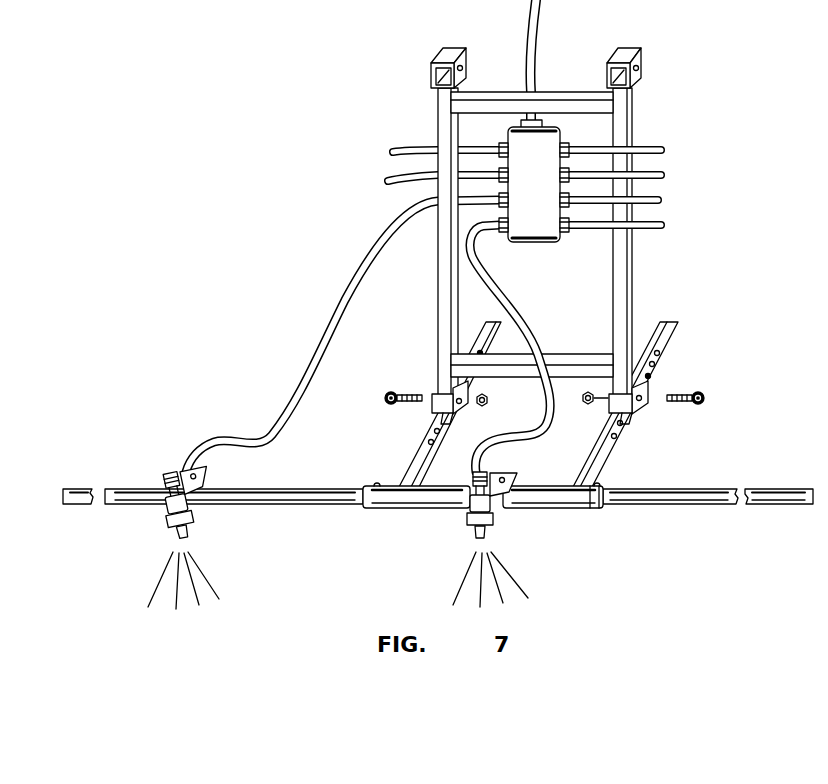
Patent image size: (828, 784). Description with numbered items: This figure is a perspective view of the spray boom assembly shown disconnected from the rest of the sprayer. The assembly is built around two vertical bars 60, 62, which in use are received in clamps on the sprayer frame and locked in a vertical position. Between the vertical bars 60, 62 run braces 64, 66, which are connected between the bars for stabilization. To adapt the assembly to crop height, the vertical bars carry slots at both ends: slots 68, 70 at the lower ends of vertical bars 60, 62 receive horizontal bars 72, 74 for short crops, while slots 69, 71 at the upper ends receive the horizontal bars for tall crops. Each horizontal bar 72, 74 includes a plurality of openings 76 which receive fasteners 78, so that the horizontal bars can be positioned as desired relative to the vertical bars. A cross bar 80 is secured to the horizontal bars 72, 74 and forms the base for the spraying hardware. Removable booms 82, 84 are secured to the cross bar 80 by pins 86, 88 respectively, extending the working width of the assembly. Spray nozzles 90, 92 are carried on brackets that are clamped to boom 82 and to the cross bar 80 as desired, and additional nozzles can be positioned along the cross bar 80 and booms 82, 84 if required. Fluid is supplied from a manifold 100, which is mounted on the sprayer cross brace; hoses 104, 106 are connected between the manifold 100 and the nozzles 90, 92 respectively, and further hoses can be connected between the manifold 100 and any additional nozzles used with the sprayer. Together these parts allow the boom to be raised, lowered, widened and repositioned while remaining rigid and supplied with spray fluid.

The vertical bar 60 is at (438, 261).
The vertical bar 62 is at (632, 255).
The brace 64 is at (578, 92).
The brace 66 is at (590, 359).
The slot 68 is at (435, 394).
The slot 69 is at (440, 61).
The slot 70 is at (635, 413).
The slot 71 is at (637, 58).
The horizontal bar 72 is at (402, 467).
The horizontal bar 74 is at (667, 330).
The openings 76 is at (615, 437).
The fastener 78 is at (410, 400).
The cross bar 80 is at (519, 508).
The removable boom 82 is at (283, 497).
The removable boom 84 is at (698, 505).
The pin 86 is at (375, 508).
The pin 88 is at (598, 508).
The spray nozzle 90 is at (172, 533).
The spray nozzle 92 is at (478, 533).
The manifold 100 is at (531, 243).
The hose 104 is at (324, 307).
The hose 106 is at (517, 309).